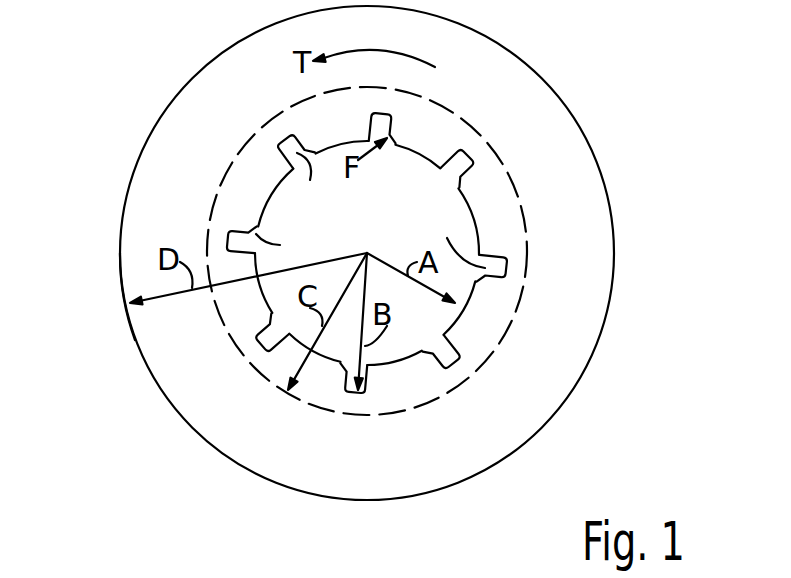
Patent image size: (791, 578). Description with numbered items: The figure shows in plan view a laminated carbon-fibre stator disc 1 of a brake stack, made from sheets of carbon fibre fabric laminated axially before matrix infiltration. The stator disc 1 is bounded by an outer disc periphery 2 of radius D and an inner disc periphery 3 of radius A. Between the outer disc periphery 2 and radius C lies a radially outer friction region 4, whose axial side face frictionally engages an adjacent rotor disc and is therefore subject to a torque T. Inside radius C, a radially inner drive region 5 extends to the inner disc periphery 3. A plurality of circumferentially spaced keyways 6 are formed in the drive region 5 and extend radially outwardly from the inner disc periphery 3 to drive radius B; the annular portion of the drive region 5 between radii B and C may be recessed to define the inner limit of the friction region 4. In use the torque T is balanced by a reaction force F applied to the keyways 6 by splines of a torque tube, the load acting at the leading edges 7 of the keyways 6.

The stator disc 1 is at (135, 414).
The outer disc periphery 2 is at (130, 322).
The inner disc periphery 3 is at (273, 203).
The friction region 4 is at (541, 394).
The drive region 5 is at (501, 331).
The keyways 6 is at (465, 167).
The leading edges 7 is at (293, 206).